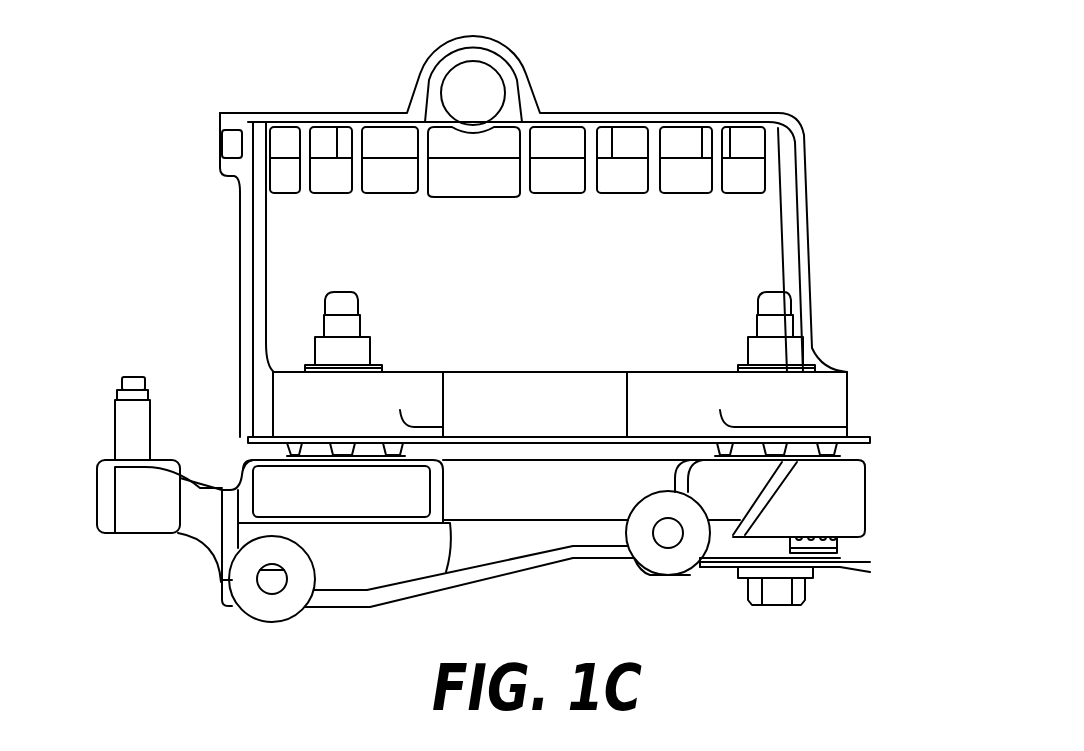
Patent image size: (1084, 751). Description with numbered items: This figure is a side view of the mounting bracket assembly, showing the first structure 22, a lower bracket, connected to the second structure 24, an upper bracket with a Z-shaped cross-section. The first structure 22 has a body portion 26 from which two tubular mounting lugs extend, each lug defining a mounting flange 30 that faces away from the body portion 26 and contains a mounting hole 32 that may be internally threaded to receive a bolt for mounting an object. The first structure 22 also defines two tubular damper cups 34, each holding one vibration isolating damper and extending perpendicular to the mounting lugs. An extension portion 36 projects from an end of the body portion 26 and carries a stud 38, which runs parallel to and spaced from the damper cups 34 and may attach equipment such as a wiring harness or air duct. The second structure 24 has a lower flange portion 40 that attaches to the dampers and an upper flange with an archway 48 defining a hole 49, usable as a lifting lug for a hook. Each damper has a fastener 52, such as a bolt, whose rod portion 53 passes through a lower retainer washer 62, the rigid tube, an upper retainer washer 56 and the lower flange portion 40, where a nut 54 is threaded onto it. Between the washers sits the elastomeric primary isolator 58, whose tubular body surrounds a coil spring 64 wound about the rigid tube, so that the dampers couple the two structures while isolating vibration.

The first structure 22 is at (101, 457).
The second structure 24 is at (222, 114).
The body portion 26 is at (540, 495).
The mounting flange 30 is at (243, 592).
The mounting hole 32 is at (281, 586).
The damper cup 34 is at (380, 498).
The extension portion 36 is at (185, 512).
The stud 38 is at (122, 405).
The lower flange portion 40 is at (307, 393).
The archway 48 is at (520, 62).
The hole 49 is at (446, 96).
The fastener 52 is at (353, 327).
The rod portion 53 is at (796, 600).
The nut 54 is at (358, 352).
The upper retainer washer 56 is at (250, 432).
The primary isolator 58 is at (287, 455).
The lower retainer washer 62 is at (868, 567).
The coil spring 64 is at (838, 548).